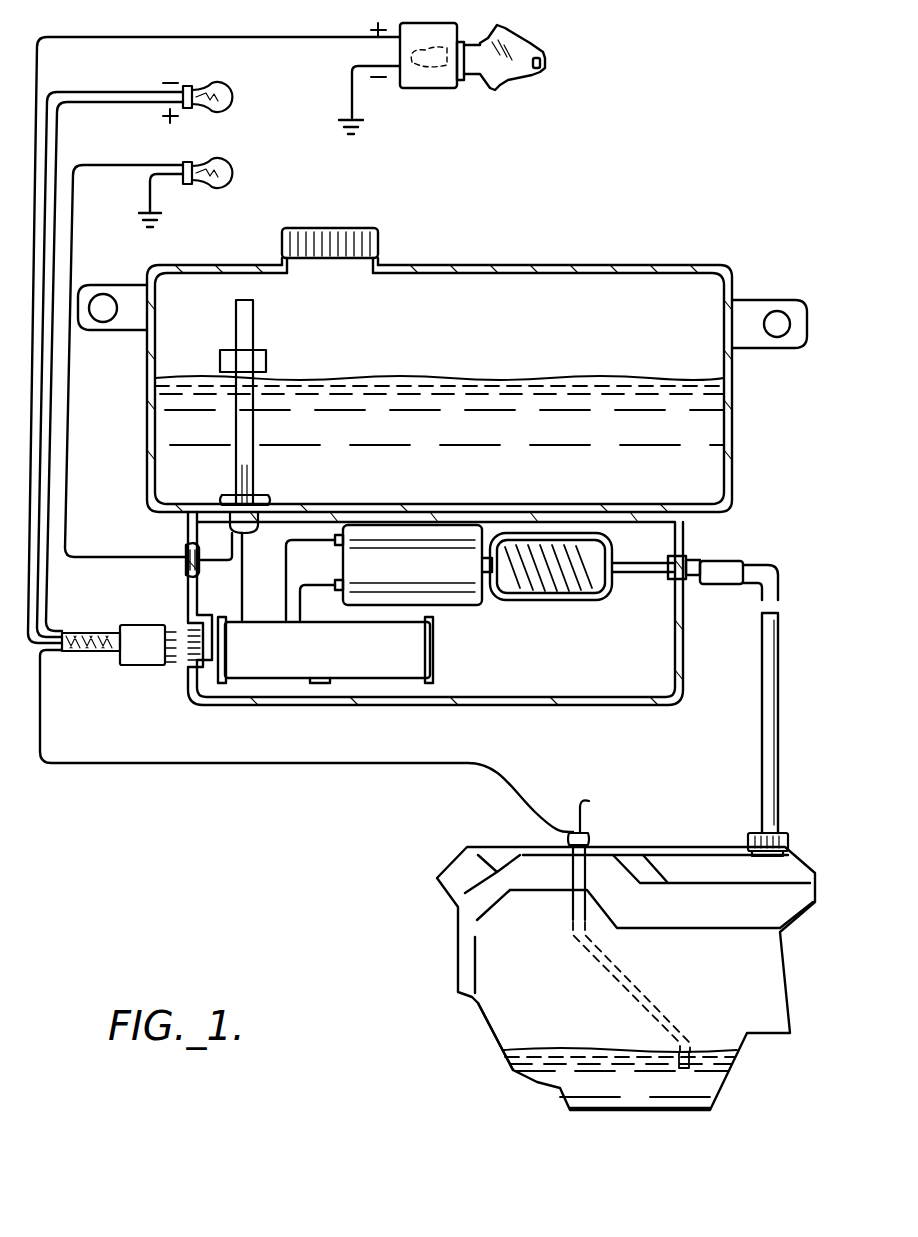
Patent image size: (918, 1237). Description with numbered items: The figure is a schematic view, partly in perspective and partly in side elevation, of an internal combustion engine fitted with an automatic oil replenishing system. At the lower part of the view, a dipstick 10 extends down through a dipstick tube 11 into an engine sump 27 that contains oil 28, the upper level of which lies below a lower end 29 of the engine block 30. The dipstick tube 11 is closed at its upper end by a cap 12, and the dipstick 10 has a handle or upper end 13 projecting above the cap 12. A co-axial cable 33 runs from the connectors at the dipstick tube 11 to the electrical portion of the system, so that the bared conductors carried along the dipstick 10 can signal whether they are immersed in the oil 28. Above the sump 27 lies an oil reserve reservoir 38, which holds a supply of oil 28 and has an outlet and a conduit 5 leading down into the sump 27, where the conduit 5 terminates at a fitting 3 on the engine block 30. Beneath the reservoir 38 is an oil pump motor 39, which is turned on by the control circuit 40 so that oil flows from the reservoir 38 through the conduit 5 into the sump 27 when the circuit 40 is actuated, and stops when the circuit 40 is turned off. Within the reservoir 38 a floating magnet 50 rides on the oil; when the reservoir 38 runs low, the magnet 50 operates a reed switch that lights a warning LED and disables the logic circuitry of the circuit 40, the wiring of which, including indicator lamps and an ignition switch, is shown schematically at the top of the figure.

The cap 3 is at (745, 838).
The conduit 5 is at (760, 700).
The dipstick 10 is at (638, 985).
The dipstick tube 11 is at (590, 846).
The cap 12 is at (592, 835).
The handle or upper end 13 is at (588, 803).
The engine sump 27 is at (565, 1093).
The oil 28 is at (606, 378).
The lower end of engine block 29 is at (488, 1020).
The engine block 30 is at (458, 932).
The co-axial cable 33 is at (226, 765).
The oil reserve reservoir 38 is at (690, 268).
The oil pump motor 39 is at (470, 607).
The circuit 40 is at (433, 672).
The floating magnet 50 is at (266, 362).